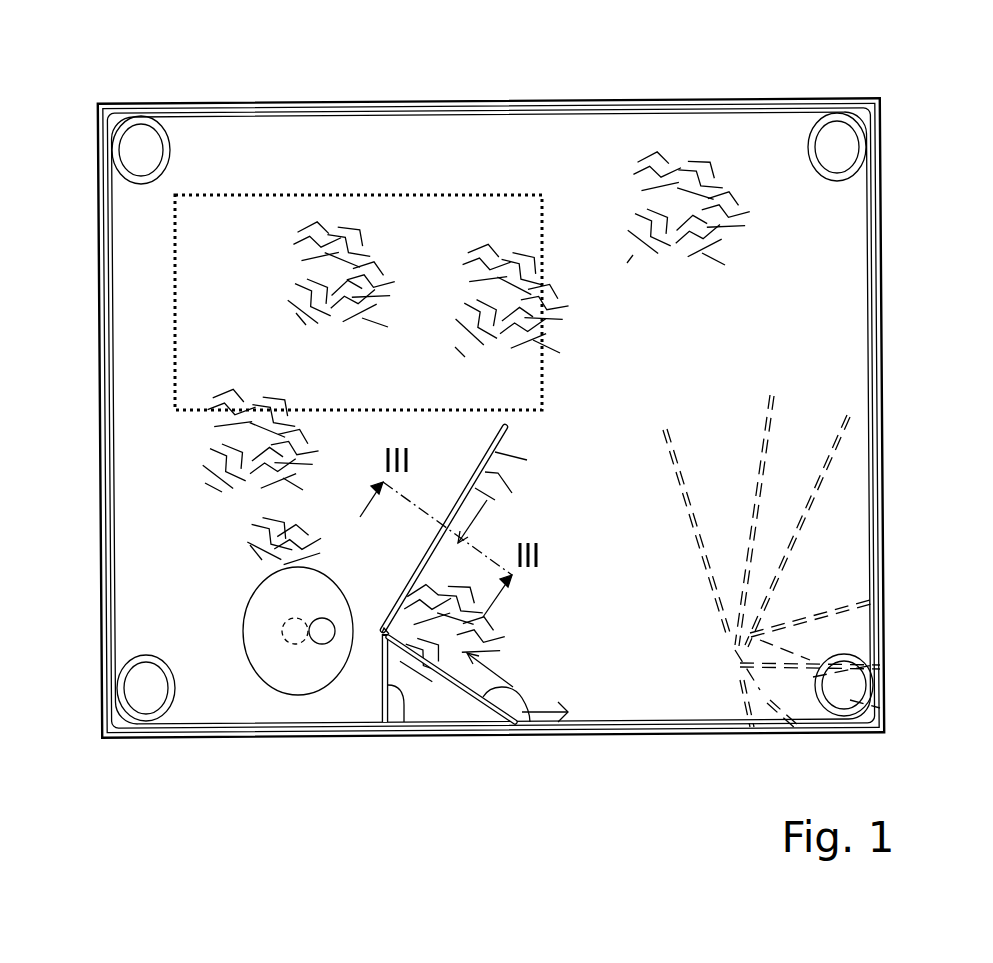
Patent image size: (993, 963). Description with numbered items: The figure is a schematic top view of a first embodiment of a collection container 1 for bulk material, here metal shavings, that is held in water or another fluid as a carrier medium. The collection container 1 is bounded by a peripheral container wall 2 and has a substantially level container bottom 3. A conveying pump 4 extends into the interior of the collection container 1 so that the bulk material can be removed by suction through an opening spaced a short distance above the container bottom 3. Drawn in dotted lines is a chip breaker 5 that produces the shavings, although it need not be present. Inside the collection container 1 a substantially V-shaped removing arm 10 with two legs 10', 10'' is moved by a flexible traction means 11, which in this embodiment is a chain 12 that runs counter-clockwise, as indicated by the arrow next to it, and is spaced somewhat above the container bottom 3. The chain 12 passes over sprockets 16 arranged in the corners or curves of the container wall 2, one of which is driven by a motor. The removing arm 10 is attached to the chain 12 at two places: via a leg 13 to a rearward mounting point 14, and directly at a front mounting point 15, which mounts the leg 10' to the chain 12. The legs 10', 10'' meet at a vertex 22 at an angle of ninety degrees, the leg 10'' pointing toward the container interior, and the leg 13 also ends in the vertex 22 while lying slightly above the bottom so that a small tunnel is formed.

The collection container 1 is at (190, 80).
The container wall 2 is at (423, 101).
The container bottom 3 is at (714, 331).
The conveying pump 4 is at (275, 667).
The chip breaker 5 is at (173, 315).
The removing arm 10 is at (451, 752).
The leg 10' is at (533, 777).
The leg 10'' is at (535, 660).
The traction means 11 is at (870, 368).
The chain 12 is at (870, 473).
The leg 13 is at (402, 722).
The mounting point 14 is at (381, 722).
The mounting point 15 is at (515, 725).
The sprockets 16 is at (128, 150).
The vertex 22 is at (382, 640).